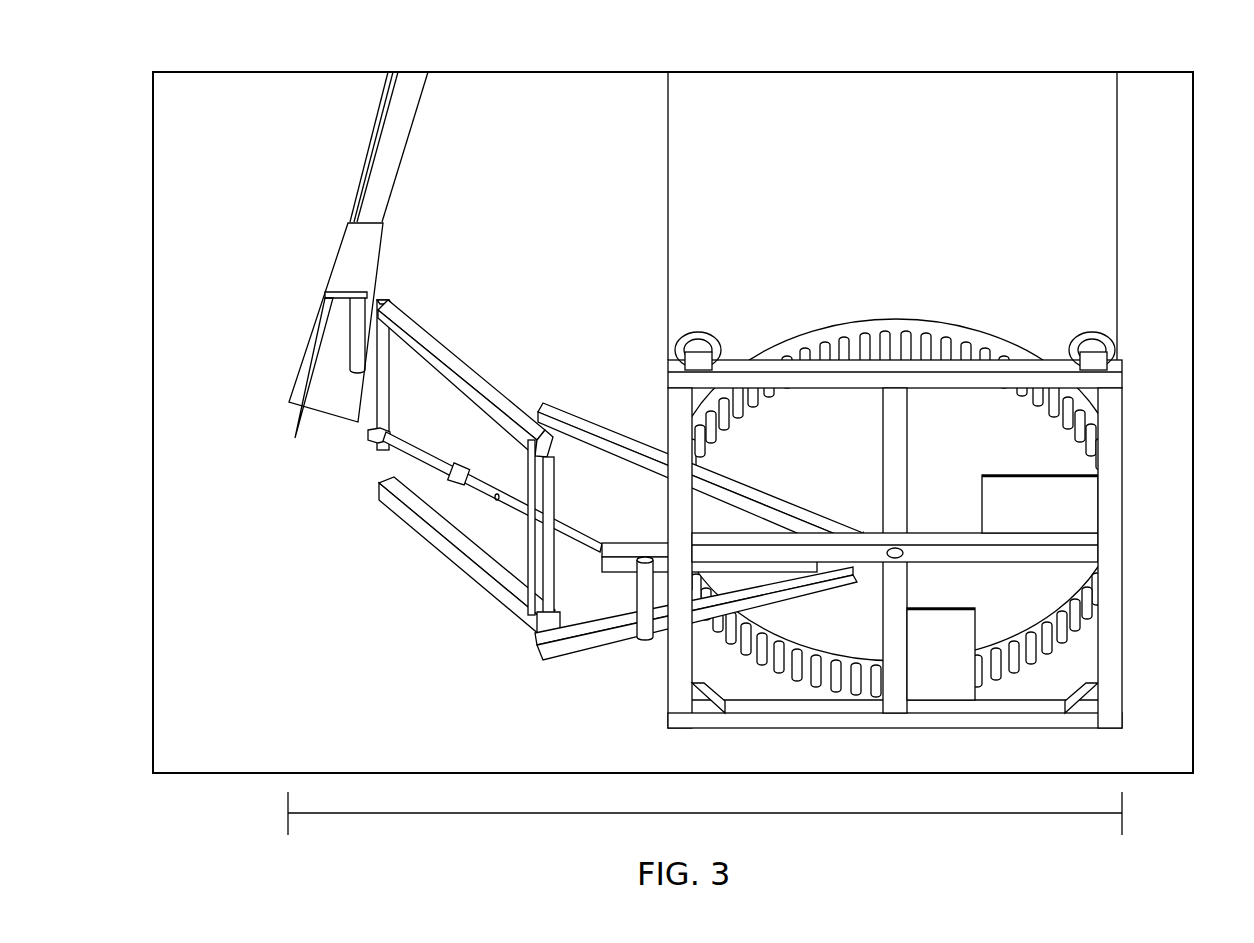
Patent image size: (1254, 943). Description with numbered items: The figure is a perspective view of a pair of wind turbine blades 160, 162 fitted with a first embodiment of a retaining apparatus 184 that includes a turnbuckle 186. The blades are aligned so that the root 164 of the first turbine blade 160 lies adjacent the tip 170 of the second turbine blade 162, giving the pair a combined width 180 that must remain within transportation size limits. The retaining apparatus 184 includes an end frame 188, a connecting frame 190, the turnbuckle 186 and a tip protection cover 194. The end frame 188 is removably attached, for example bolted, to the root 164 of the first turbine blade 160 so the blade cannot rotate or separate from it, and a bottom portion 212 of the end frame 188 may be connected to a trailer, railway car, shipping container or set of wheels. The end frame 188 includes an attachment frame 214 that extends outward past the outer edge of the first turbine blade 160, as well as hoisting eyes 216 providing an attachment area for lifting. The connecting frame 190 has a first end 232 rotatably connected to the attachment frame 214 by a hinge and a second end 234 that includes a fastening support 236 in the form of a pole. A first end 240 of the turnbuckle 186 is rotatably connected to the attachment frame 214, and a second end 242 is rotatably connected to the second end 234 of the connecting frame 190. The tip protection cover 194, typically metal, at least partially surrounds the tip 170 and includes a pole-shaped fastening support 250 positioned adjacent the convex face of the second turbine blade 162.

The first wind turbine blade 160 is at (894, 216).
The second wind turbine blade 162 is at (395, 143).
The root 164 is at (1118, 245).
The tip 170 is at (298, 418).
The combined width 180 is at (408, 813).
The retaining apparatus 184 is at (384, 586).
The turnbuckle 186 is at (503, 505).
The end frame 188 is at (1122, 657).
The connecting frame 190 is at (474, 371).
The tip protection cover 194 is at (300, 347).
The bottom portion 212 is at (927, 517).
The attachment frame 214 is at (690, 520).
The hoisting eyes 216 is at (708, 333).
The first end 232 is at (528, 410).
The second end 234 is at (391, 302).
The fastening support 236 is at (420, 362).
The first end 240 is at (614, 573).
The second end 242 is at (405, 452).
The fastening support 250 is at (325, 330).